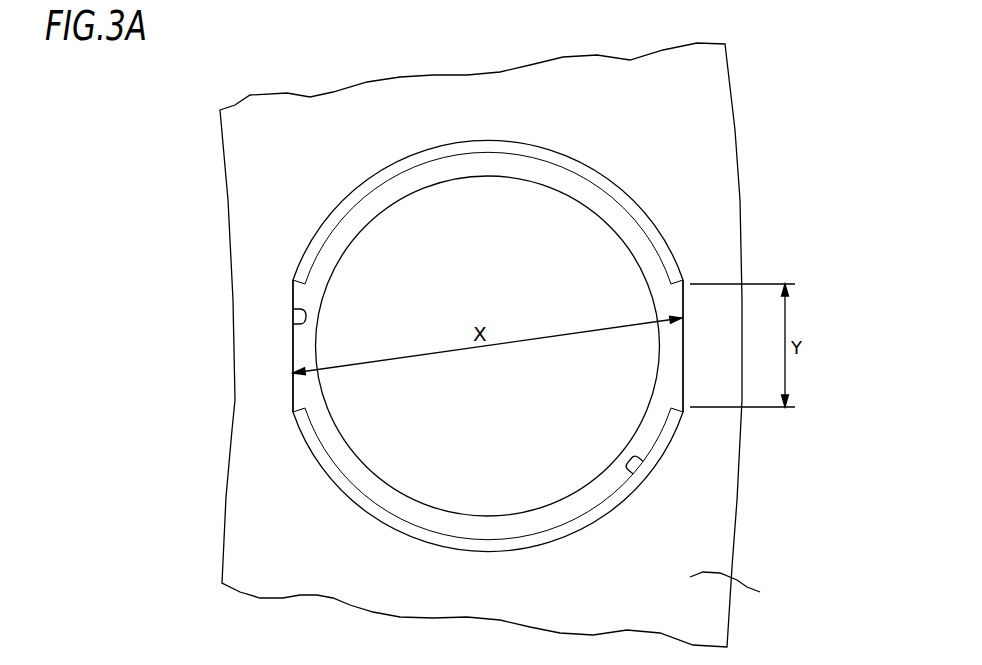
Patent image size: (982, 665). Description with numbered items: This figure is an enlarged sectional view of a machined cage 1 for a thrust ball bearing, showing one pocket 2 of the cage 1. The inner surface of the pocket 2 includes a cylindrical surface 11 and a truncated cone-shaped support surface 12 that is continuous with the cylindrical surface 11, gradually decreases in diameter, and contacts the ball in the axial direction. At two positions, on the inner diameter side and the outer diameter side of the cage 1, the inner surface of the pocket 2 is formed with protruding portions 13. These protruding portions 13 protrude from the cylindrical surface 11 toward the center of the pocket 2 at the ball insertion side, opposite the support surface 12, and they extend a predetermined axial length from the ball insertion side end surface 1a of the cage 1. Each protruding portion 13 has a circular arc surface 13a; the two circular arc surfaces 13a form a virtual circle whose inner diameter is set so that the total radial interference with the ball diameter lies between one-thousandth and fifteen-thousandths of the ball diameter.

The machined cage 1 is at (735, 143).
The ball insertion side end surface 1a is at (760, 592).
The pocket 2 is at (405, 263).
The cylindrical surface 11 is at (645, 460).
The support surface 12 is at (490, 165).
The protruding portions 13 is at (290, 355).
The circular arc surface 13a is at (290, 318).